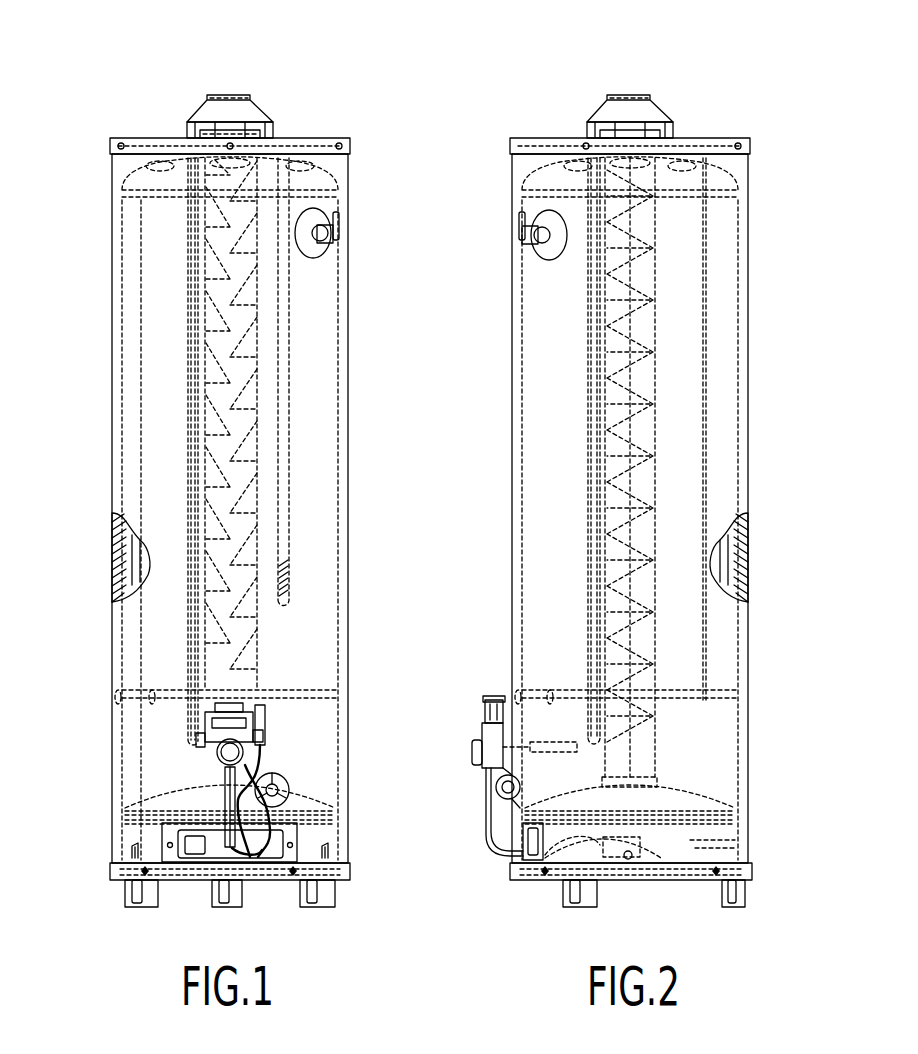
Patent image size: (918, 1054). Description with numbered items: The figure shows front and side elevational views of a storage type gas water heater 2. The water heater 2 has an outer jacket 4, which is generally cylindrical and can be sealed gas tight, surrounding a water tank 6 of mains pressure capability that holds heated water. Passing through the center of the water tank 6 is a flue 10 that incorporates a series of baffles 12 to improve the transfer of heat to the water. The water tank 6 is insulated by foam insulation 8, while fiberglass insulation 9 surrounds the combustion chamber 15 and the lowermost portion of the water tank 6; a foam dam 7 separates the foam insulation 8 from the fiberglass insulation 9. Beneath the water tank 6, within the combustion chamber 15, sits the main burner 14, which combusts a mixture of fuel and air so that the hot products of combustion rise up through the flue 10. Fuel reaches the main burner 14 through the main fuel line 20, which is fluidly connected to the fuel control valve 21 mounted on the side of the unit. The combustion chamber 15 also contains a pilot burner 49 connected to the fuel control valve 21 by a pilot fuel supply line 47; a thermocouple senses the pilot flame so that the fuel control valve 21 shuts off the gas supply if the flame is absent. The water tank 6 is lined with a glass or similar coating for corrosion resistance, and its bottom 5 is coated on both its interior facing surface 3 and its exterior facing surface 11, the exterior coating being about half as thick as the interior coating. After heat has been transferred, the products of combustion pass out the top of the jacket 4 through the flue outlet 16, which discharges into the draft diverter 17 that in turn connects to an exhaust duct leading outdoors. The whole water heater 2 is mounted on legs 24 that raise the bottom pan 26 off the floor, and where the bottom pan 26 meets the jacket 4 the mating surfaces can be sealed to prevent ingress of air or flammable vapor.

In FIG. 1, the water heater 2 is at (340, 78).
In FIG. 2, the water heater 2 is at (728, 78).
In FIG. 1, the interior facing surface 3 is at (310, 792).
In FIG. 2, the interior facing surface 3 is at (745, 798).
In FIG. 1, the jacket 4 is at (113, 178).
In FIG. 2, the jacket 4 is at (750, 178).
In FIG. 1, the bottom 5 is at (172, 768).
In FIG. 2, the bottom 5 is at (694, 774).
In FIG. 1, the water tank 6 is at (120, 240).
In FIG. 2, the water tank 6 is at (742, 240).
In FIG. 1, the foam dam 7 is at (112, 690).
In FIG. 2, the foam dam 7 is at (750, 690).
In FIG. 1, the foam insulation 8 is at (104, 555).
In FIG. 2, the foam insulation 8 is at (749, 552).
In FIG. 1, the fiberglass insulation 9 is at (112, 757).
In FIG. 2, the fiberglass insulation 9 is at (750, 720).
In FIG. 1, the flue 10 is at (206, 286).
In FIG. 2, the flue 10 is at (656, 270).
In FIG. 1, the exterior facing surface 11 is at (160, 798).
In FIG. 2, the exterior facing surface 11 is at (690, 798).
In FIG. 1, the baffles 12 is at (196, 347).
In FIG. 2, the baffles 12 is at (640, 382).
In FIG. 2, the main burner 14 is at (665, 836).
In FIG. 1, the combustion chamber 15 is at (150, 846).
In FIG. 2, the combustion chamber 15 is at (712, 848).
In FIG. 1, the flue outlet 16 is at (190, 137).
In FIG. 1, the draft diverter 17 is at (196, 125).
In FIG. 2, the main fuel line 20 is at (490, 846).
In FIG. 2, the fuel control valve 21 is at (482, 728).
In FIG. 1, the legs 24 is at (130, 893).
In FIG. 2, the legs 24 is at (566, 893).
In FIG. 1, the bottom pan 26 is at (110, 873).
In FIG. 2, the bottom pan 26 is at (512, 872).
In FIG. 1, the pilot fuel supply line 47 is at (258, 856).
In FIG. 2, the pilot fuel supply line 47 is at (572, 857).
In FIG. 2, the pilot burner 49 is at (628, 862).